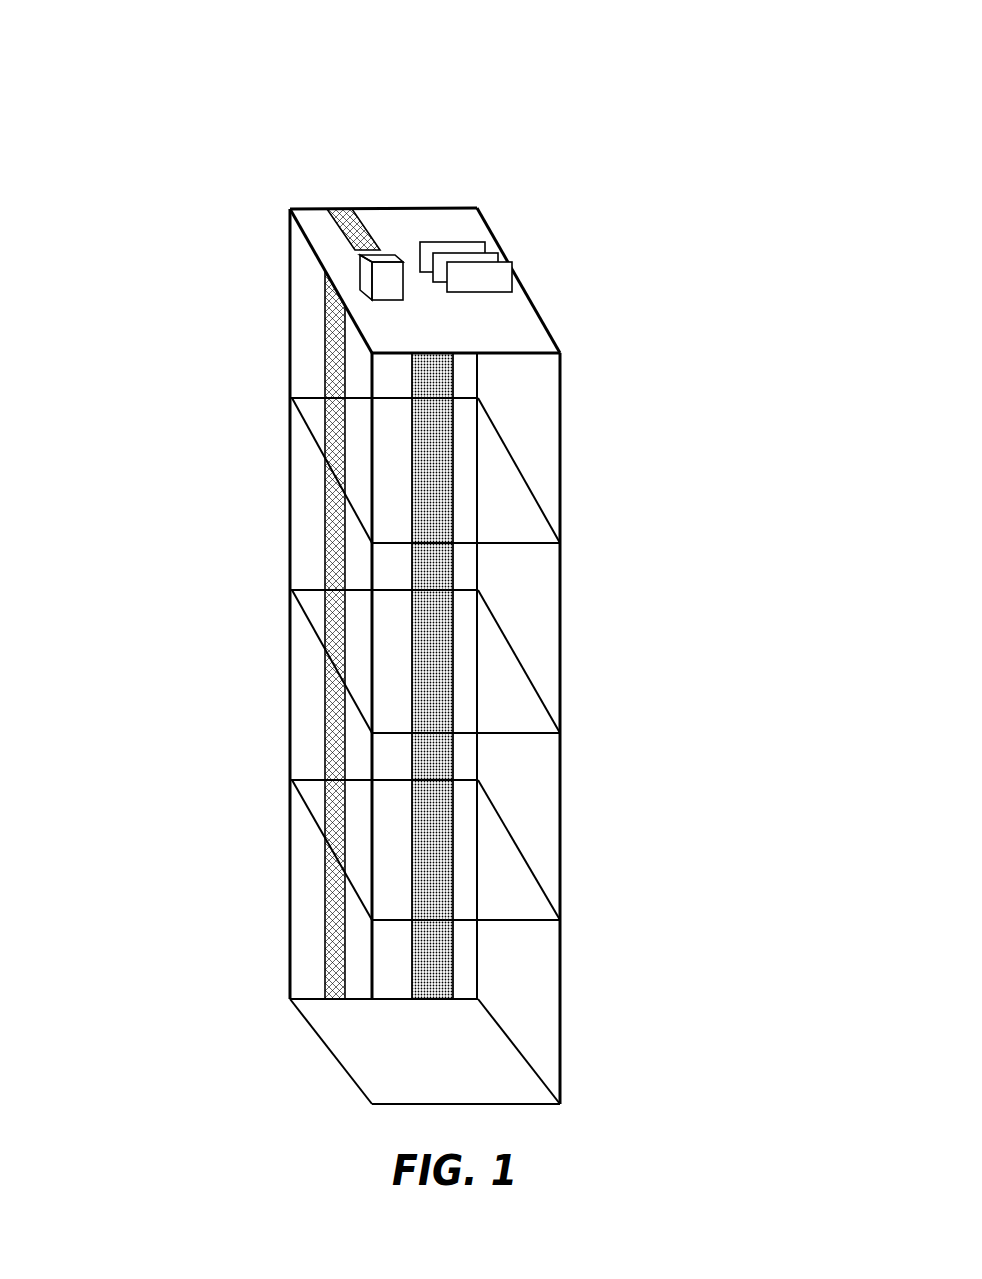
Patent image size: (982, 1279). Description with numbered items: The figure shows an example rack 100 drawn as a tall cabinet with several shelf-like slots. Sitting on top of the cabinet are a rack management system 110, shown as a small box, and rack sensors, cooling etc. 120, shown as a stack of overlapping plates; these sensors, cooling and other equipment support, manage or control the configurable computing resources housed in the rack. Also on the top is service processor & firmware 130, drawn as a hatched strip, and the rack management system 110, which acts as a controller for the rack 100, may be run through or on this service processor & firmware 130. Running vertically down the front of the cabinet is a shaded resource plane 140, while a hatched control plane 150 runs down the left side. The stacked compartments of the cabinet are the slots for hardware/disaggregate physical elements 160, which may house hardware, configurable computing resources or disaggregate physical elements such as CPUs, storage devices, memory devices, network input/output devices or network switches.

The rack 100 is at (535, 41).
The rack management system 110 is at (388, 246).
The rack sensors, cooling etc. 120 is at (513, 261).
The service processor & firmware 130 is at (358, 249).
The resource plane 140 is at (456, 375).
The control plane 150 is at (324, 542).
The slots for hardware/disaggregate physical elements 160 is at (482, 912).